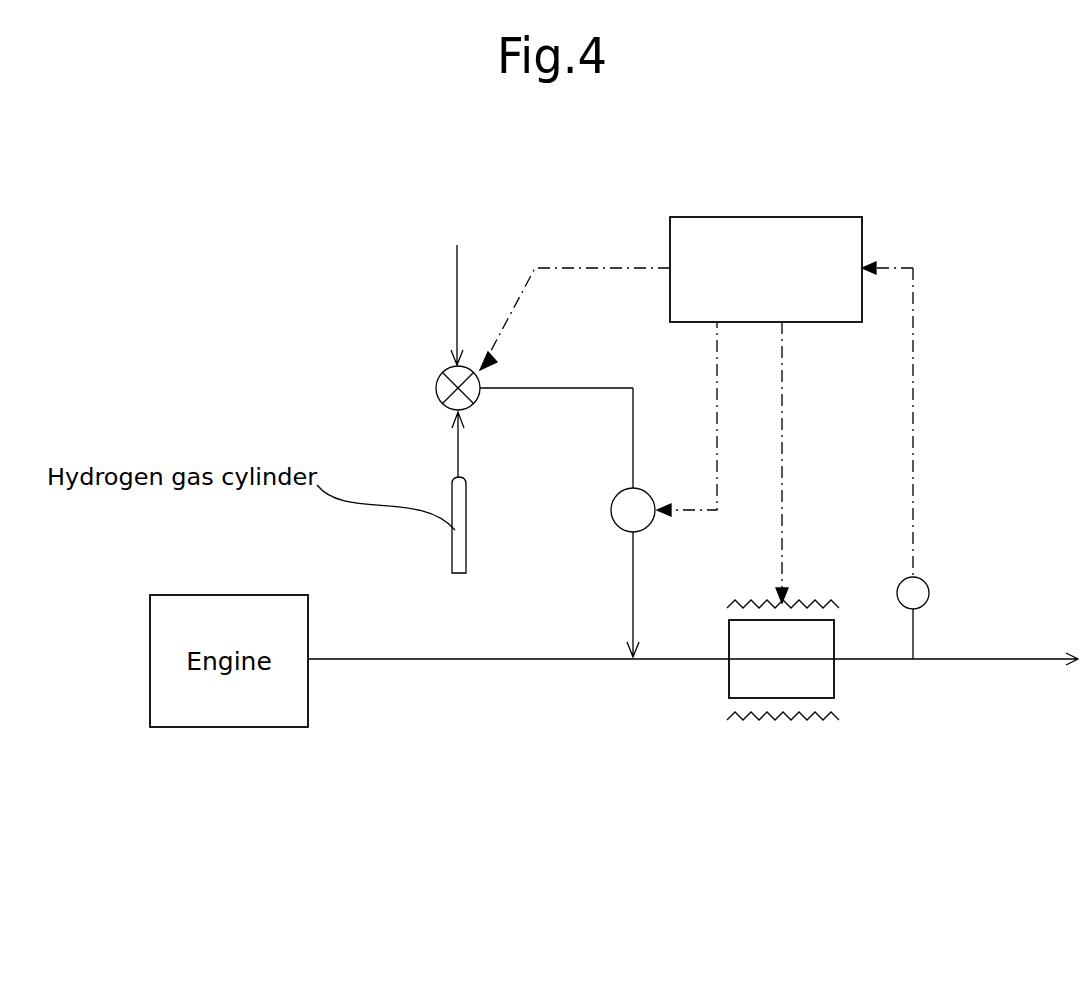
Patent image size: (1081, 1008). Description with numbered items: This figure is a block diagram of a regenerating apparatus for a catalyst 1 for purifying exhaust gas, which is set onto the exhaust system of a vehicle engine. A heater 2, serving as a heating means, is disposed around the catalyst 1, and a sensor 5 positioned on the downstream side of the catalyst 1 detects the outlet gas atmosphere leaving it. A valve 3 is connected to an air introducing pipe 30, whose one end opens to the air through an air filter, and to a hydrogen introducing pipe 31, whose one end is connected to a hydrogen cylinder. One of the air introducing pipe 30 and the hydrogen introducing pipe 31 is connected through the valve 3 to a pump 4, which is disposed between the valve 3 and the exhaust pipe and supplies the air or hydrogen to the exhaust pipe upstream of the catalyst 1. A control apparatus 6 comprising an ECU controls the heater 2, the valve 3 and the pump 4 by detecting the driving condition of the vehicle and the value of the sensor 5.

The catalyst for purifying exhaust gas 1 is at (735, 677).
The heater 2 is at (815, 603).
The valve 3 is at (440, 370).
The pump 4 is at (612, 520).
The sensor 5 is at (925, 585).
The control apparatus 6 is at (738, 228).
The air introducing pipe 30 is at (453, 277).
The hydrogen introducing pipe 31 is at (455, 443).